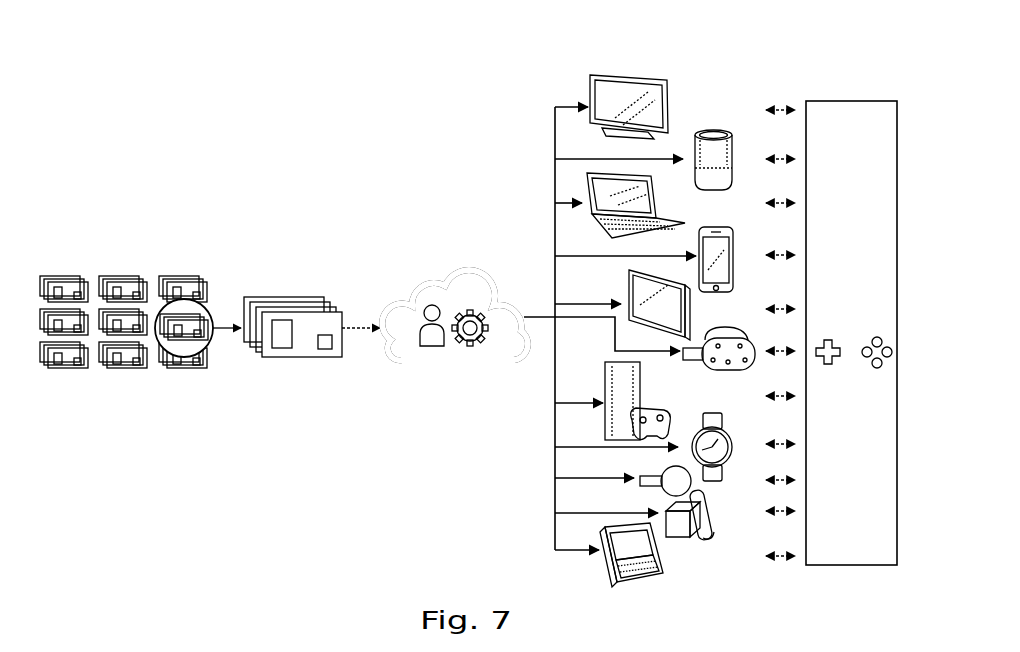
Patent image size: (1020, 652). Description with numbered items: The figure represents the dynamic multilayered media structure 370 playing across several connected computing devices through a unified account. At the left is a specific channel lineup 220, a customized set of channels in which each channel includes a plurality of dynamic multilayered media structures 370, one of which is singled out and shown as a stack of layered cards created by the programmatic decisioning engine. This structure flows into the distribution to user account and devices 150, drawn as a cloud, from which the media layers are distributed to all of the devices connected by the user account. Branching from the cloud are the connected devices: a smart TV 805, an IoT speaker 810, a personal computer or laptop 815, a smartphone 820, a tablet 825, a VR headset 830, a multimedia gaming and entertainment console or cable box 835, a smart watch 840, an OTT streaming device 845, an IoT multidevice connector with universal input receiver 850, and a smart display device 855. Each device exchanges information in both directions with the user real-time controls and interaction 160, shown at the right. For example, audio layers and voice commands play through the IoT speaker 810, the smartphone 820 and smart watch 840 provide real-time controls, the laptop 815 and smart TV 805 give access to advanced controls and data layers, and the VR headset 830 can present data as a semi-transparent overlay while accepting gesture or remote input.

The specific channel lineup 220 is at (92, 282).
The dynamic multilayered media structure 370 is at (288, 300).
The distribution to user account and devices 150 is at (470, 291).
The user real-time controls and interaction 160 is at (845, 101).
The smart TV 805 is at (667, 93).
The IoT speaker 810 is at (727, 146).
The personal computer or laptop 815 is at (654, 213).
The smartphone 820 is at (729, 241).
The tablet 825 is at (684, 320).
The VR headset 830 is at (727, 341).
The multimedia gaming and entertainment console or cable box 835 is at (636, 403).
The smart watch 840 is at (722, 435).
The OTT streaming device 845 is at (660, 475).
The IoT multidevice connector with universal input receiver 850 is at (708, 528).
The smart display device 855 is at (657, 553).